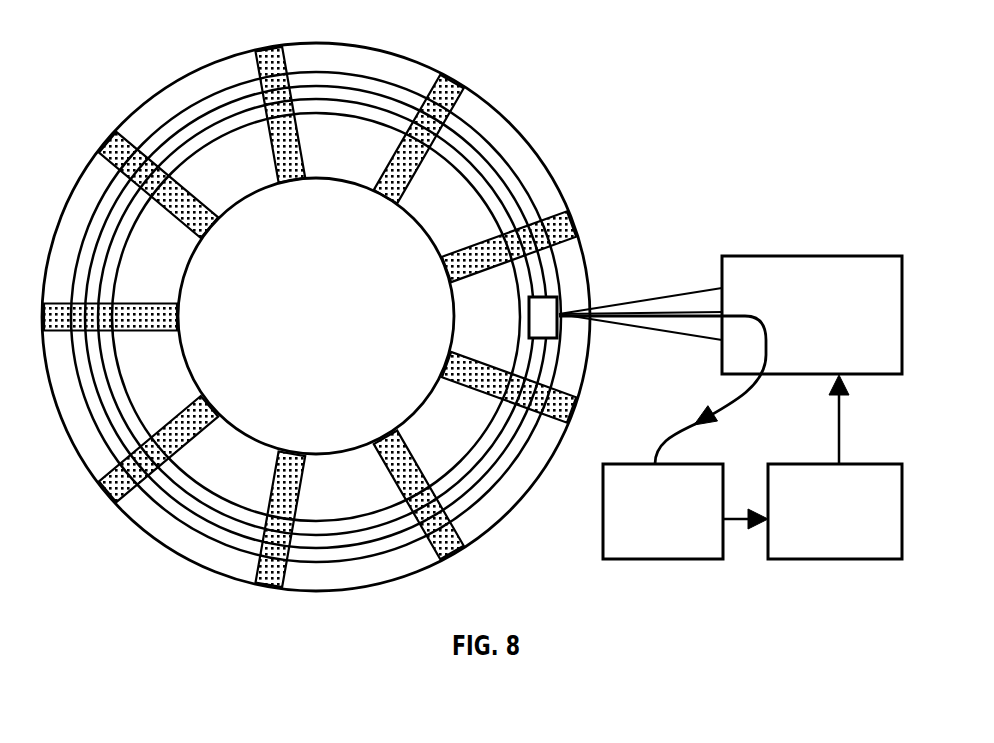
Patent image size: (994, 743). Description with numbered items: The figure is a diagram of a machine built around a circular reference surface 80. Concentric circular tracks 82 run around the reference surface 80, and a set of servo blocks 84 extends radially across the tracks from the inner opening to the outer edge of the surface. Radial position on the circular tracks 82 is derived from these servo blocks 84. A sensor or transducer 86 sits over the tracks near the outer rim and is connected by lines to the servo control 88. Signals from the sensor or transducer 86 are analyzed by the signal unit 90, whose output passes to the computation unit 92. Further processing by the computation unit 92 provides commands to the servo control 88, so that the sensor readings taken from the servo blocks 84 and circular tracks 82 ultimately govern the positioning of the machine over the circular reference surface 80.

The circular reference surface 80 is at (527, 132).
The circular tracks 82 is at (537, 188).
The servo blocks 84 is at (253, 563).
The sensor or transducer 86 is at (557, 290).
The servo control 88 is at (843, 247).
The signal unit 90 is at (592, 533).
The computation unit 92 is at (828, 570).